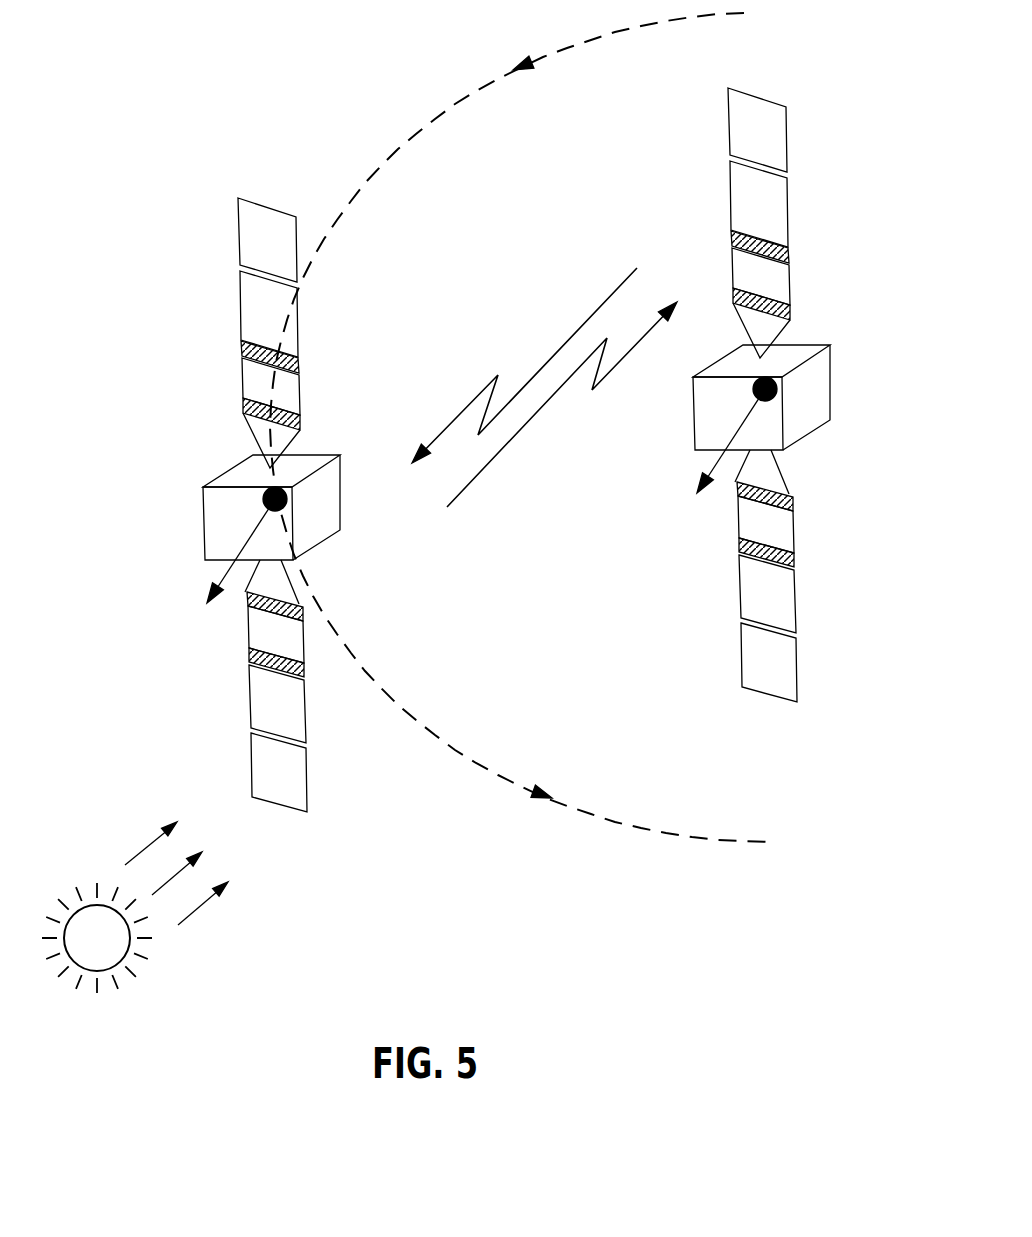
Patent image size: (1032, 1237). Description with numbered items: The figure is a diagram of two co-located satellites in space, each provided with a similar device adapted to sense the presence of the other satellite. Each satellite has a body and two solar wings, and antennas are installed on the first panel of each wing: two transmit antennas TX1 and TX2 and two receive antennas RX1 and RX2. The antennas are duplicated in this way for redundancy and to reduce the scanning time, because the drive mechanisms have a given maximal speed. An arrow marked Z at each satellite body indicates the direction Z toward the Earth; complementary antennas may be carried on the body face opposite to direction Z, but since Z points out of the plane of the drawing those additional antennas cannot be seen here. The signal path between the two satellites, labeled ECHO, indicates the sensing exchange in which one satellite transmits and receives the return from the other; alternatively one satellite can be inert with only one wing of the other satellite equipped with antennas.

The transmit antenna TX1 is at (542, 302).
The receive antenna RX1 is at (543, 360).
The transmit antenna TX2 is at (547, 557).
The receive antenna RX2 is at (551, 613).
The direction Z is at (479, 507).
The echo signal between satellites ECHO is at (526, 387).